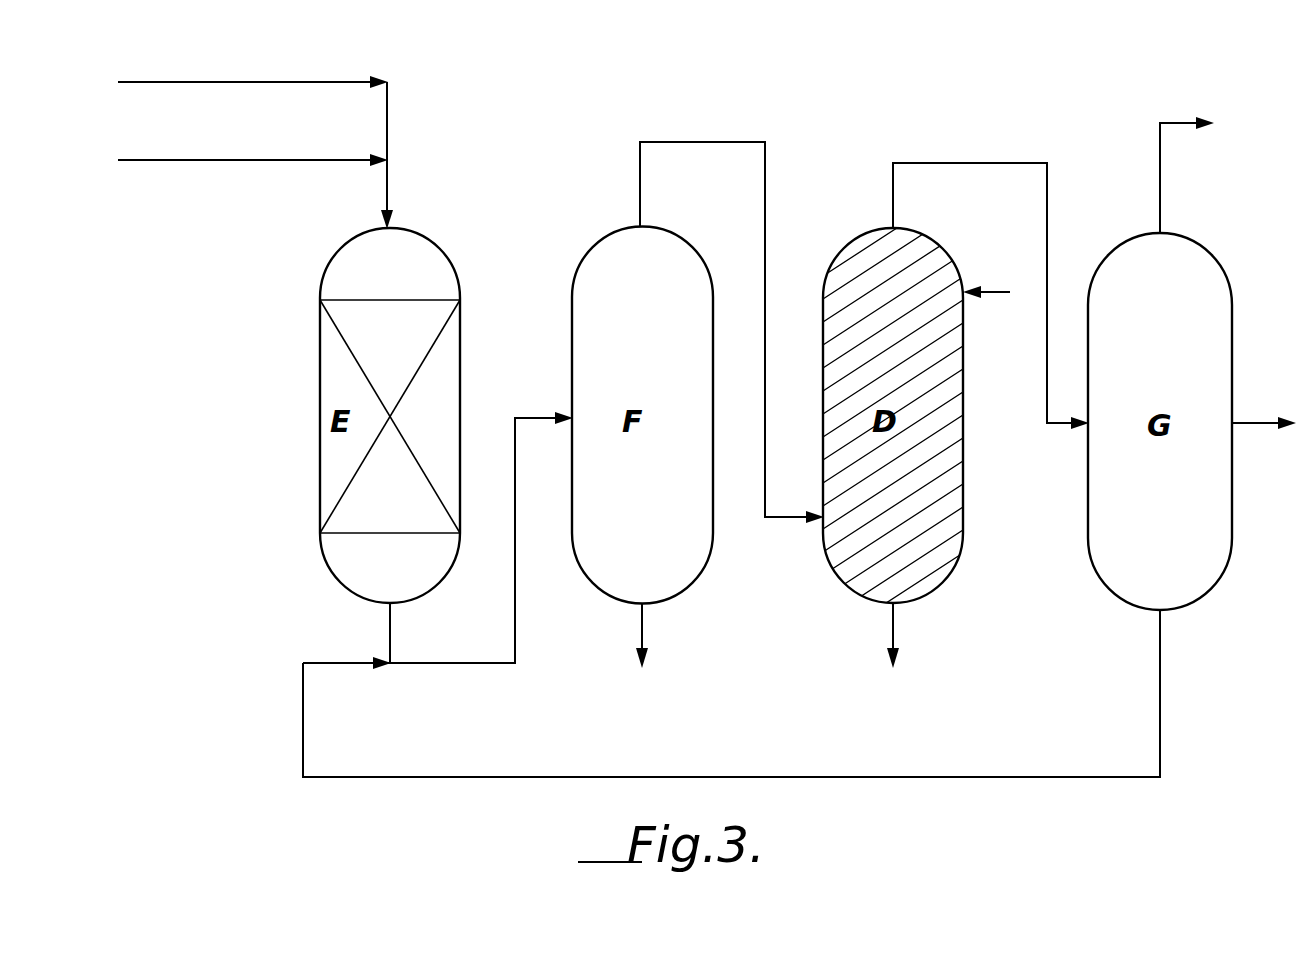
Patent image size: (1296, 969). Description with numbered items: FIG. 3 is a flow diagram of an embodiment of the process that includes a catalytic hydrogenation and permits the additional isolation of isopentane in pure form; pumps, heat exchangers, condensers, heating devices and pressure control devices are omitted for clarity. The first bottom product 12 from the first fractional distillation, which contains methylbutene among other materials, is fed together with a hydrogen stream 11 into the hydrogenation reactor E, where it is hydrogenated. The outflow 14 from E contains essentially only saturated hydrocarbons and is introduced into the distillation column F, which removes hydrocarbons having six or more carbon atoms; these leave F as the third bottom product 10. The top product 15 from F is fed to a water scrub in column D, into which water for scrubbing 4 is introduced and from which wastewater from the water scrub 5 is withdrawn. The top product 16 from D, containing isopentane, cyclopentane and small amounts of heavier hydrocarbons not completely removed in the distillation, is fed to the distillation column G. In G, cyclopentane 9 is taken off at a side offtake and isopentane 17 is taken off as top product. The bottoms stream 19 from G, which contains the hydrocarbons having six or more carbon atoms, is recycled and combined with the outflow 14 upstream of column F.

The hydrogen stream 11 is at (280, 52).
The first bottom product 12 is at (218, 141).
The outflow from E 14 is at (437, 665).
The top product from F 15 is at (725, 117).
The top product from D 16 is at (1003, 138).
The isopentane 17 is at (1187, 98).
The cyclopentane 9 is at (1254, 425).
The third bottom product 10 is at (718, 637).
The wastewater from the water scrub 5 is at (893, 626).
The water for scrubbing 4 is at (995, 292).
The bottoms stream from G 19 is at (900, 779).